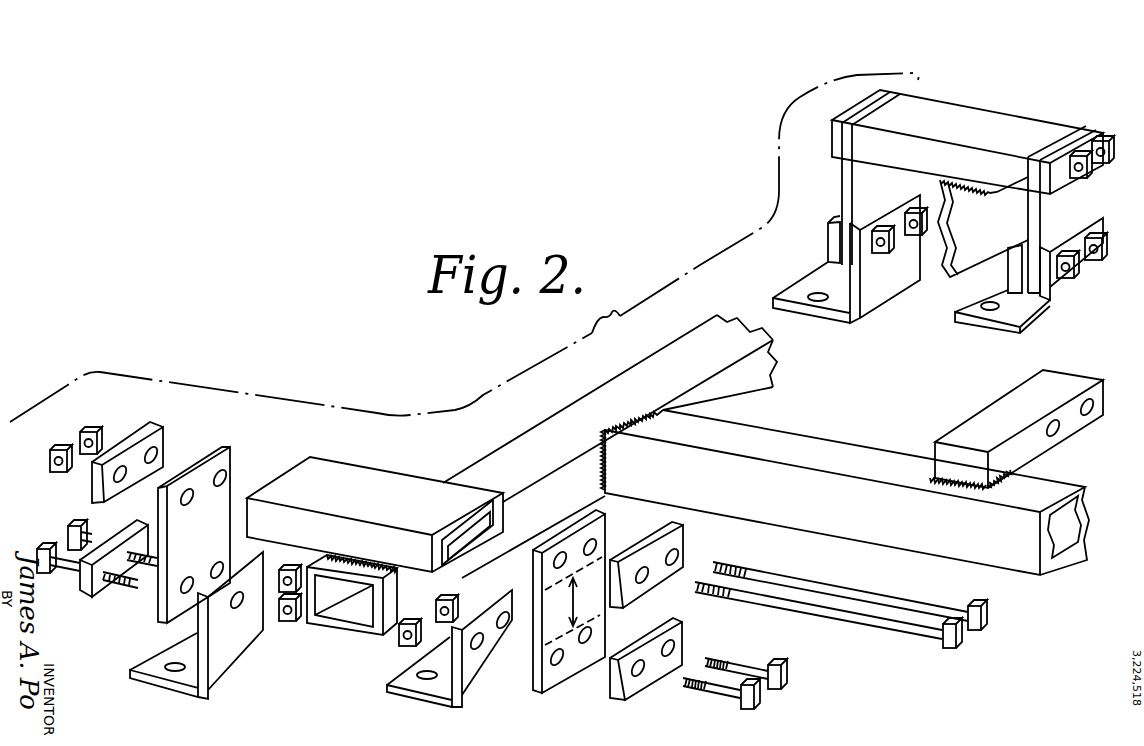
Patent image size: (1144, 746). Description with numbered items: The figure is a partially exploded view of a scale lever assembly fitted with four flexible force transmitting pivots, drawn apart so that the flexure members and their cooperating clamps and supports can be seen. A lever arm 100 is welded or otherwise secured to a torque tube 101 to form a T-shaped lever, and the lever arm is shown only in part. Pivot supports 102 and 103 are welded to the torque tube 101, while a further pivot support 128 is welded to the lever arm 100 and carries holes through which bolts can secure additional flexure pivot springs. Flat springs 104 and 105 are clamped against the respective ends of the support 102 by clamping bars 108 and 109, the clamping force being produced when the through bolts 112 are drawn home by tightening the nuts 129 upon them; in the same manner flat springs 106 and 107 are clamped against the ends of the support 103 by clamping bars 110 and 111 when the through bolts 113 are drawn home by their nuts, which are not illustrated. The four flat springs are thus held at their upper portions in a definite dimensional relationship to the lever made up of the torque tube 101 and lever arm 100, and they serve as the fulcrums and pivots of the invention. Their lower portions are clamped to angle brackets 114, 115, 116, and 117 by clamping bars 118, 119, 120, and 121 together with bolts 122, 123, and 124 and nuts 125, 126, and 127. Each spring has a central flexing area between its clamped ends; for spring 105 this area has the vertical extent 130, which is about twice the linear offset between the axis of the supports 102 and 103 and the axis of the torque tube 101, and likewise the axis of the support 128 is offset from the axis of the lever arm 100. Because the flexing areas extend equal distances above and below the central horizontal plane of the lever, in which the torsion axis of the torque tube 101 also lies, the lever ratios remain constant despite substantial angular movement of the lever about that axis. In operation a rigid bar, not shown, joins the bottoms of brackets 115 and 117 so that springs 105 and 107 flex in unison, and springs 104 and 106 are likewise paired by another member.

The lever arm 100 is at (845, 492).
The torque tube 101 is at (735, 377).
The pivot support 102 is at (375, 514).
The pivot support 103 is at (967, 142).
The flat spring 104 is at (194, 535).
The flat spring 105 is at (572, 670).
The flat spring 106 is at (840, 187).
The flat spring 107 is at (1090, 128).
The clamping bar 108 is at (158, 452).
The clamping bar 109 is at (667, 547).
The clamping bar 110 is at (866, 98).
The clamping bar 111 is at (1108, 142).
The through bolt 112 is at (980, 630).
The through bolt 113 is at (1086, 179).
The angle bracket 114 is at (233, 657).
The angle bracket 115 is at (484, 677).
The angle bracket 116 is at (878, 280).
The angle bracket 117 is at (988, 325).
The clamping bar 118 is at (87, 588).
The clamping bar 119 is at (677, 633).
The clamping bar 120 is at (827, 243).
The clamping bar 121 is at (1108, 228).
The bolt 122 is at (40, 548).
The bolt 123 is at (750, 700).
The bolt 124 is at (1066, 279).
The nut 125 is at (270, 572).
The nut 126 is at (437, 622).
The nut 127 is at (912, 236).
The pivot support 128 is at (1016, 429).
The nut 129 is at (86, 431).
The vertical extent of flexing part 130 is at (573, 601).